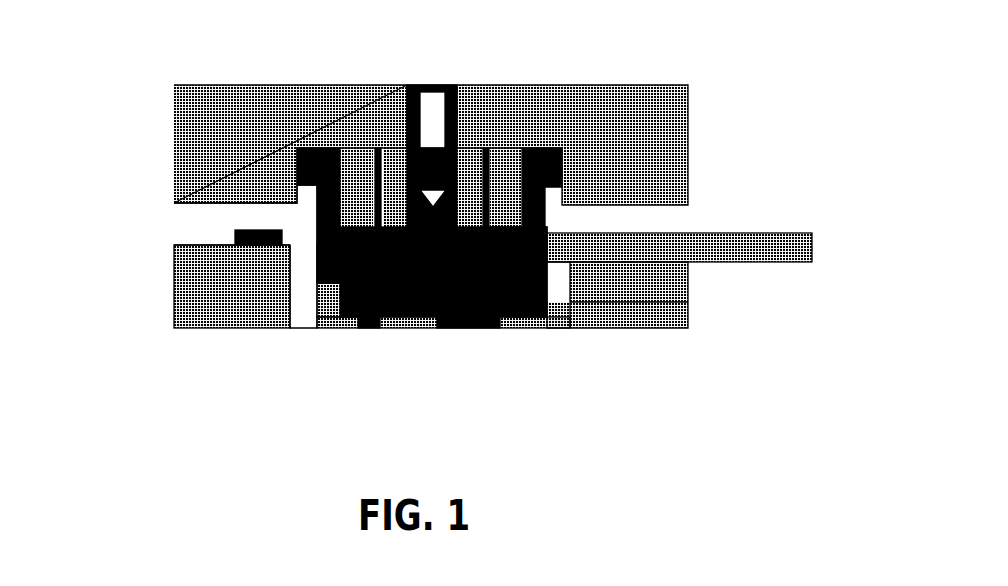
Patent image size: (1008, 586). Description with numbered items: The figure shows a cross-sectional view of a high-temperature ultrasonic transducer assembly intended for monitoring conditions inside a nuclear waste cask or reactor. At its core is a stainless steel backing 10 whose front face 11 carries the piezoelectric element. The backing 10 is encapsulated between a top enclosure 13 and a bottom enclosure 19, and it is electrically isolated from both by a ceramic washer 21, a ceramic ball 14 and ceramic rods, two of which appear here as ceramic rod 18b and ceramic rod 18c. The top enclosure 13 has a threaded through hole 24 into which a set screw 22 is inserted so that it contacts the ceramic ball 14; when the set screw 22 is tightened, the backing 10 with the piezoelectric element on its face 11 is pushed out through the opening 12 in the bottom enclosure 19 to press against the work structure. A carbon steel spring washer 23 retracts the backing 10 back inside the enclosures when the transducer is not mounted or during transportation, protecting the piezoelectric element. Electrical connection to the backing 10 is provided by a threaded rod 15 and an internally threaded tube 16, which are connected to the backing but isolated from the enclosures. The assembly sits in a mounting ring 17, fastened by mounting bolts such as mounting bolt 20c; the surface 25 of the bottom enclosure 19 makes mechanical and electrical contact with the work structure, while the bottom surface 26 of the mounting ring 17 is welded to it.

The backing 10 is at (455, 290).
The front face 11 is at (437, 327).
The opening 12 is at (363, 327).
The top enclosure 13 is at (662, 122).
The ceramic ball 14 is at (433, 207).
The threaded rod 15 is at (520, 240).
The internally threaded tube 16 is at (752, 243).
The mounting ring 17 is at (650, 310).
The ceramic rod 18b is at (512, 152).
The ceramic rod 18c is at (345, 156).
The bottom enclosure 19 is at (267, 213).
The mounting bolt 20c is at (237, 233).
The ceramic washer 21 is at (328, 300).
The set screw 22 is at (413, 86).
The carbon steel spring washer 23 is at (333, 272).
The threaded through hole 24 is at (463, 90).
The surface of the bottom enclosure 25 is at (308, 327).
The bottom surface of the mounting ring 26 is at (200, 327).